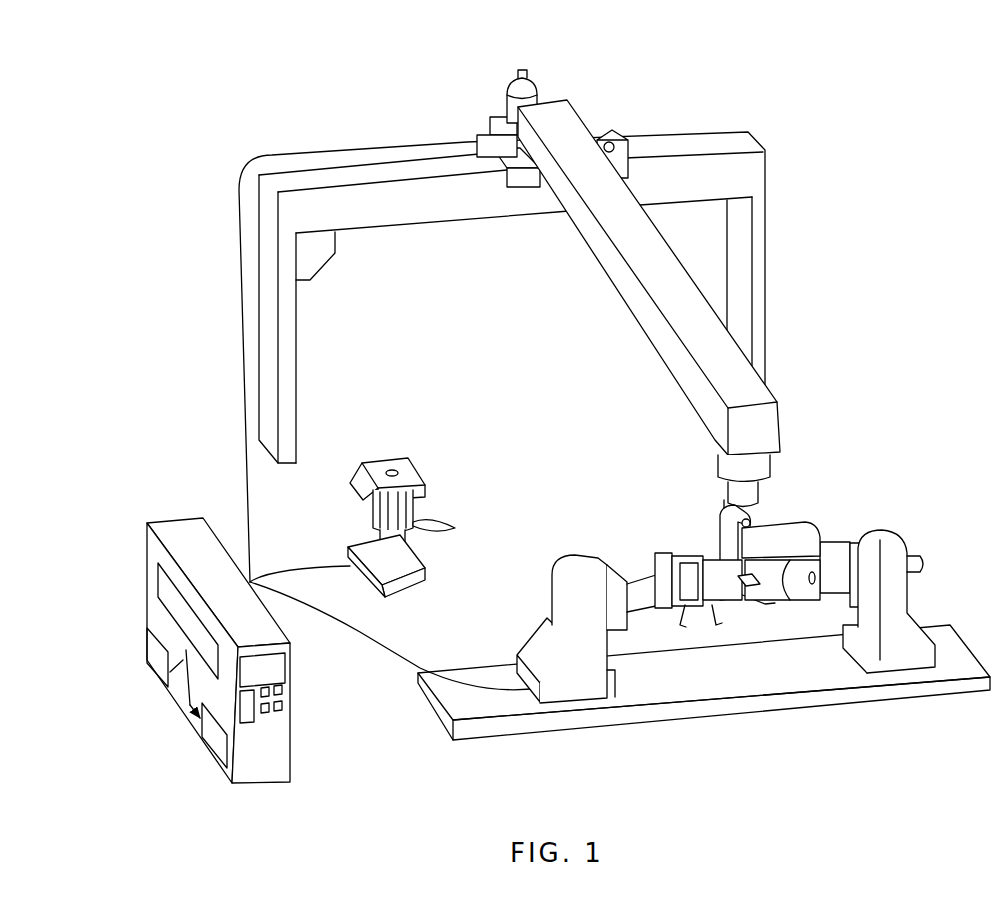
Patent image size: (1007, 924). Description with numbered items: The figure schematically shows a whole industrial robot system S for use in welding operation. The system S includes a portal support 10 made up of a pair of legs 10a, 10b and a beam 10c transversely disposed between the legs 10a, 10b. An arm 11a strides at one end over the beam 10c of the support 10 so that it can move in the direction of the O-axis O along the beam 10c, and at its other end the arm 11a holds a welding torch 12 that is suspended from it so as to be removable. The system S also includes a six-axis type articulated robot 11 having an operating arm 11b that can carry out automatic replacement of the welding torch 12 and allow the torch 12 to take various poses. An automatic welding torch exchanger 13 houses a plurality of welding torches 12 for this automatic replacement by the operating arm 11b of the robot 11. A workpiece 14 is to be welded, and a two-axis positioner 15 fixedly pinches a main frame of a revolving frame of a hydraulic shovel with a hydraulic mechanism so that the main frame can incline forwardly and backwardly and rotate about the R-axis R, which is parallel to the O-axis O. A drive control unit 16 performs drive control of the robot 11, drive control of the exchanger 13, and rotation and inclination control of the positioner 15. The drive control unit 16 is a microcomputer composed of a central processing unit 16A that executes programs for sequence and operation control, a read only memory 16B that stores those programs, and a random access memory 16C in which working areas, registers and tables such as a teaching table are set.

The portal support 10 is at (543, 326).
The leg 10a is at (287, 325).
The leg 10b is at (765, 276).
The beam 10c is at (478, 212).
The six-axis type articulated robot 11 is at (692, 352).
The arm 11a is at (635, 305).
The operating arm 11b is at (722, 532).
The welding torch 12 is at (455, 528).
The automatic welding torch exchanger 13 is at (443, 495).
The workpiece 14 is at (800, 540).
The two-axis positioner 15 is at (925, 605).
The drive control unit 16 is at (198, 667).
The central processing unit (CPU) 16A is at (157, 567).
The read only memory (ROM) 16B is at (147, 650).
The random access memory (RAM) 16C is at (225, 765).
The O-axis O is at (603, 43).
The R-axis R is at (923, 571).
The industrial robot system S is at (863, 186).